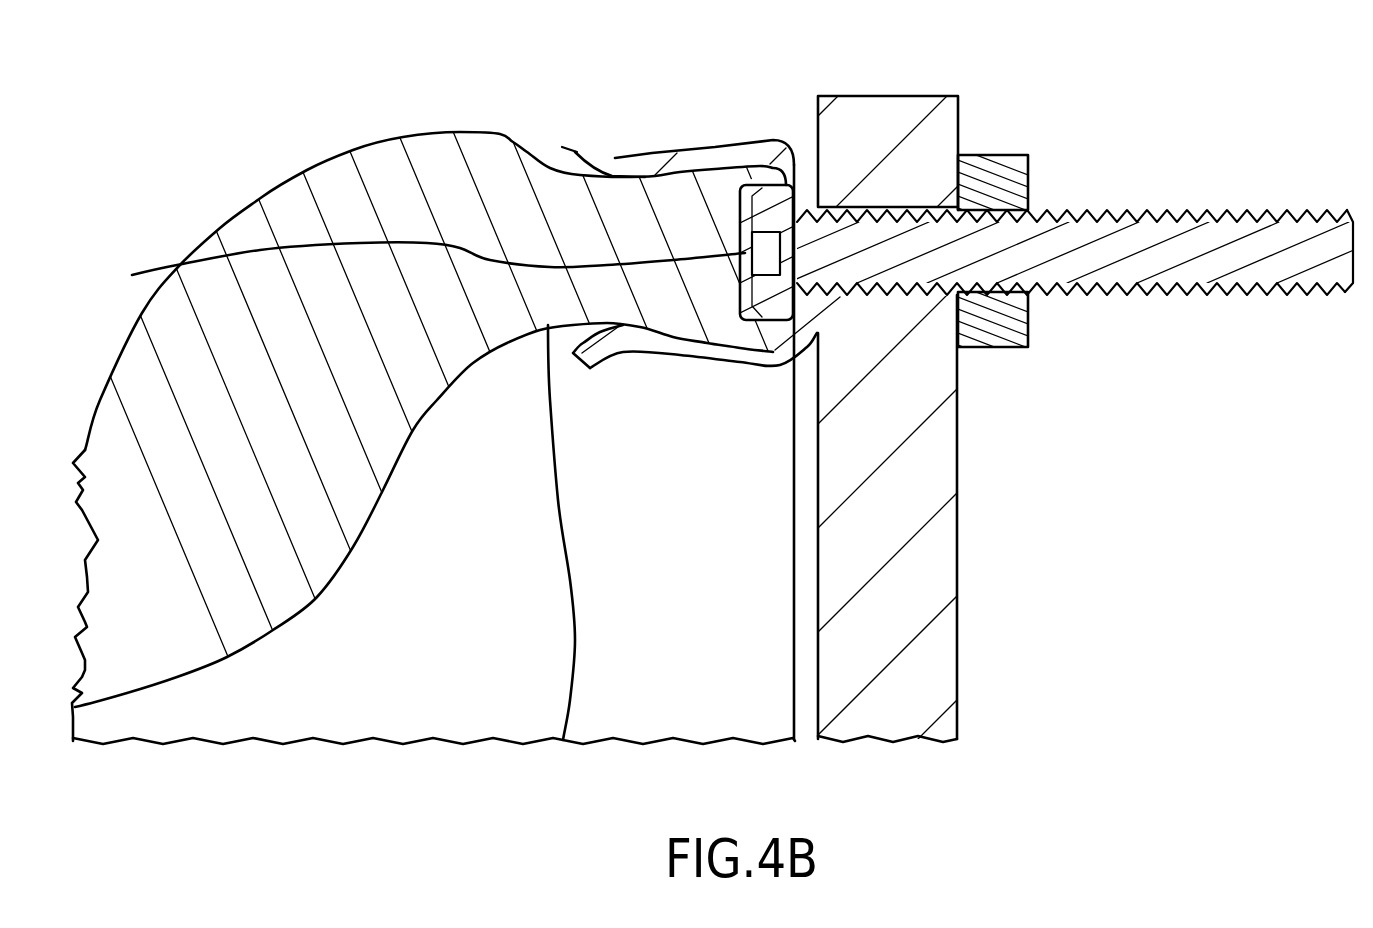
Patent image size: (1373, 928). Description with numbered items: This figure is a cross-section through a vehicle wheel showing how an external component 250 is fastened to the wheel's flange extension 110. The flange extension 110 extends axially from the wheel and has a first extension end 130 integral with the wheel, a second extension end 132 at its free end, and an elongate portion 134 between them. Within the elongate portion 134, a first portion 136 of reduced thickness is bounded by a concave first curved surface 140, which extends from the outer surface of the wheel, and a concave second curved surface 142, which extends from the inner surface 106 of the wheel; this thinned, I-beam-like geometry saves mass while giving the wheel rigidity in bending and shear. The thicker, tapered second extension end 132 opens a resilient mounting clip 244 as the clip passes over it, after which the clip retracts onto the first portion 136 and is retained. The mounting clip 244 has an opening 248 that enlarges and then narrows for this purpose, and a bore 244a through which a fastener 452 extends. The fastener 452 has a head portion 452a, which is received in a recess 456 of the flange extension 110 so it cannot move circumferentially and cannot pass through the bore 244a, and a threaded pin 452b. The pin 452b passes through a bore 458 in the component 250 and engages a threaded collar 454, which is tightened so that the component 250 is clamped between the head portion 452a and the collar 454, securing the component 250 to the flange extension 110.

The inner surface 106 is at (690, 655).
The flange extension 110 is at (655, 195).
The first extension end 130 is at (403, 173).
The second extension end 132 is at (784, 157).
The elongate portion 134 is at (603, 233).
The first portion 136 is at (527, 222).
The first curved surface 140 is at (550, 172).
The second curved surface 142 is at (561, 744).
The mounting clip 244 is at (803, 160).
The bore 244a is at (782, 313).
The opening 248 is at (637, 233).
The component 250 is at (936, 625).
The fastener 452 is at (1258, 243).
The head portion 452a is at (760, 200).
The pin 452b is at (1328, 257).
The collar 454 is at (1017, 173).
The recess 456 is at (419, 267).
The bore 458 is at (958, 292).